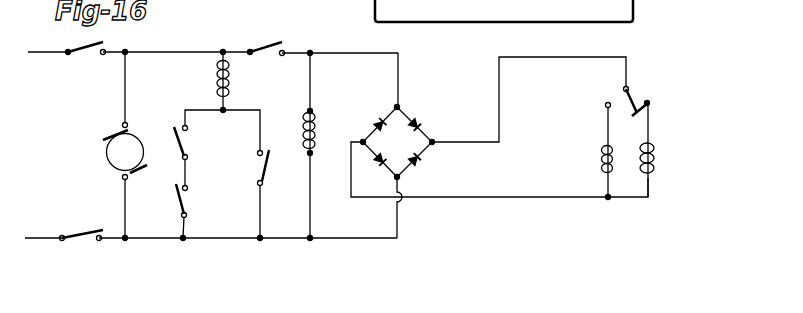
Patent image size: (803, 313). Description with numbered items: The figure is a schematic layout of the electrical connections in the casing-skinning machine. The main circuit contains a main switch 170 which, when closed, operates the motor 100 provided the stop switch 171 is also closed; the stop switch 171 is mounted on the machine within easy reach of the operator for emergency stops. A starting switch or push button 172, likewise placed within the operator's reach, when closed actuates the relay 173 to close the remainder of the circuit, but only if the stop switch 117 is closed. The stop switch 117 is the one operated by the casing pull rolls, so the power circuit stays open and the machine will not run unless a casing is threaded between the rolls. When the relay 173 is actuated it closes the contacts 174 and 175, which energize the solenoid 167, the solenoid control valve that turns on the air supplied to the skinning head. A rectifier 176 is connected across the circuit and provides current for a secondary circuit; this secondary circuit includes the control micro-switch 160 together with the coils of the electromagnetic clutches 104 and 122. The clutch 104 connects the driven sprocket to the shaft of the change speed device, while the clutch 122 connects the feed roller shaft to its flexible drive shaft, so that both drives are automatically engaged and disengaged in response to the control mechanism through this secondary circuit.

The motor 100 is at (108, 158).
The electromagnetic clutch 104 is at (657, 161).
The stop control switch 117 is at (188, 192).
The electromagnetic clutch device 122 is at (602, 159).
The control micro-switch 160 is at (632, 88).
The solenoid control valve 167 is at (317, 120).
The main switch 170 is at (65, 62).
The stop switch 171 is at (97, 243).
The starting switch 172 is at (258, 163).
The relay 173 is at (233, 88).
The contacts 174 is at (192, 144).
The contacts 175 is at (266, 46).
The rectifier 176 is at (427, 133).